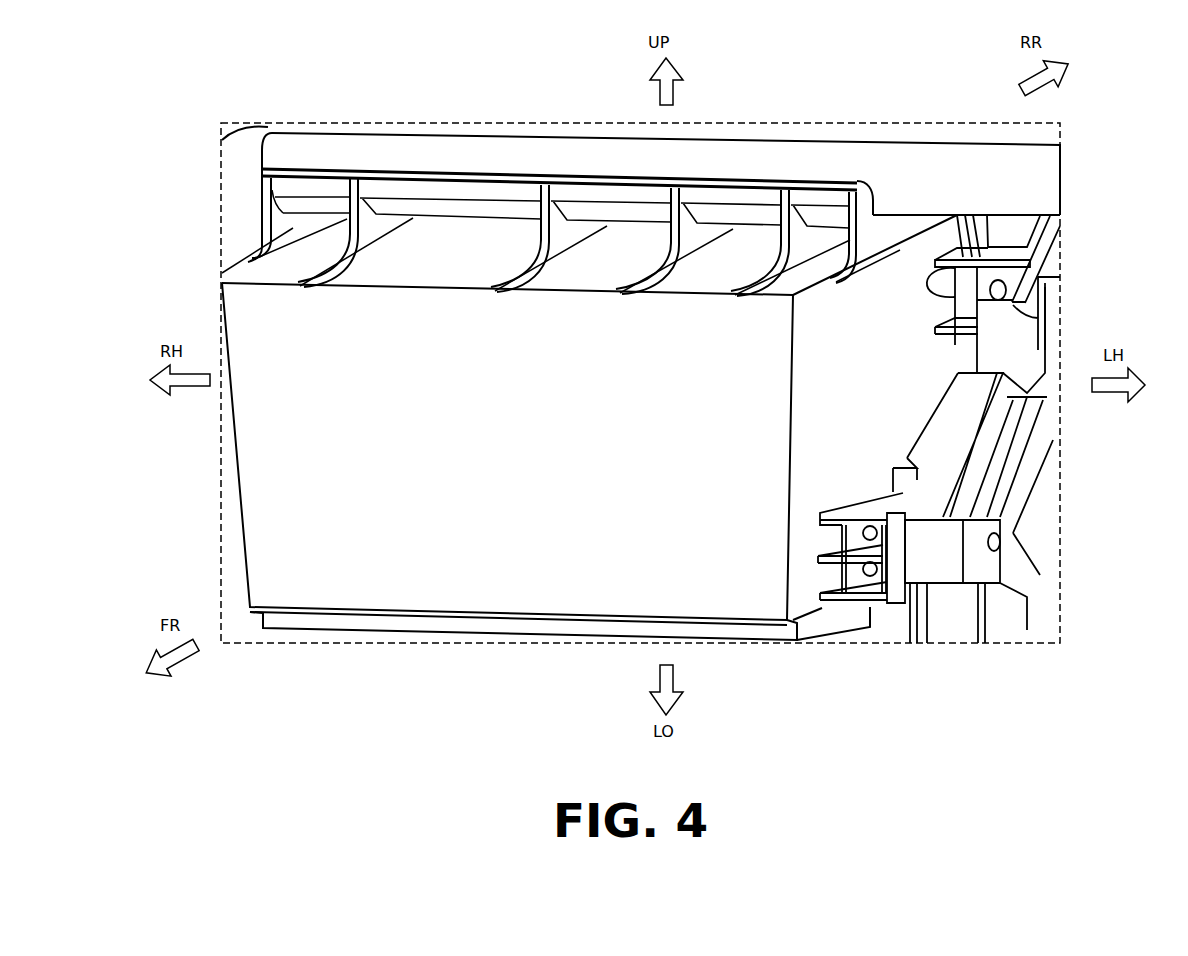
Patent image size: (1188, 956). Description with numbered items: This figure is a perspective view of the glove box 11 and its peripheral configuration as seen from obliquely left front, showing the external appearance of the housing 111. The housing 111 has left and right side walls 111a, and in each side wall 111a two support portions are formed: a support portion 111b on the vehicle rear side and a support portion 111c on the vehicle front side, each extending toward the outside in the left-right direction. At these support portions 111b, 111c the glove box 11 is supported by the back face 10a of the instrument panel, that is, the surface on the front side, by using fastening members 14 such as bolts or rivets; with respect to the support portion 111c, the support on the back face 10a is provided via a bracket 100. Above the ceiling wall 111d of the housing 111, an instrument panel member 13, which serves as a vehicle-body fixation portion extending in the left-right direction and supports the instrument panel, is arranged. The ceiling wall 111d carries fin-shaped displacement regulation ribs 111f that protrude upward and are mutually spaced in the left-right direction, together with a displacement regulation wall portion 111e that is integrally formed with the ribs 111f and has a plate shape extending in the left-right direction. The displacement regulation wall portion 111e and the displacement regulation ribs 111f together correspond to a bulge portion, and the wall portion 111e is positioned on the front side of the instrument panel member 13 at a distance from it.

The back face of the instrument panel 10a is at (993, 498).
The glove box 11 is at (244, 313).
The instrument panel member 13 is at (915, 178).
The fastening members 14 is at (972, 286).
The bracket 100 is at (1040, 556).
The housing 111 is at (295, 435).
The side walls 111a is at (877, 357).
The support portion on a vehicle rear side 111b is at (1005, 288).
The support portion on a vehicle front side 111c is at (896, 590).
The ceiling wall 111d is at (438, 248).
The displacement regulation wall portion 111e is at (478, 192).
The displacement regulation ribs 111f is at (647, 248).